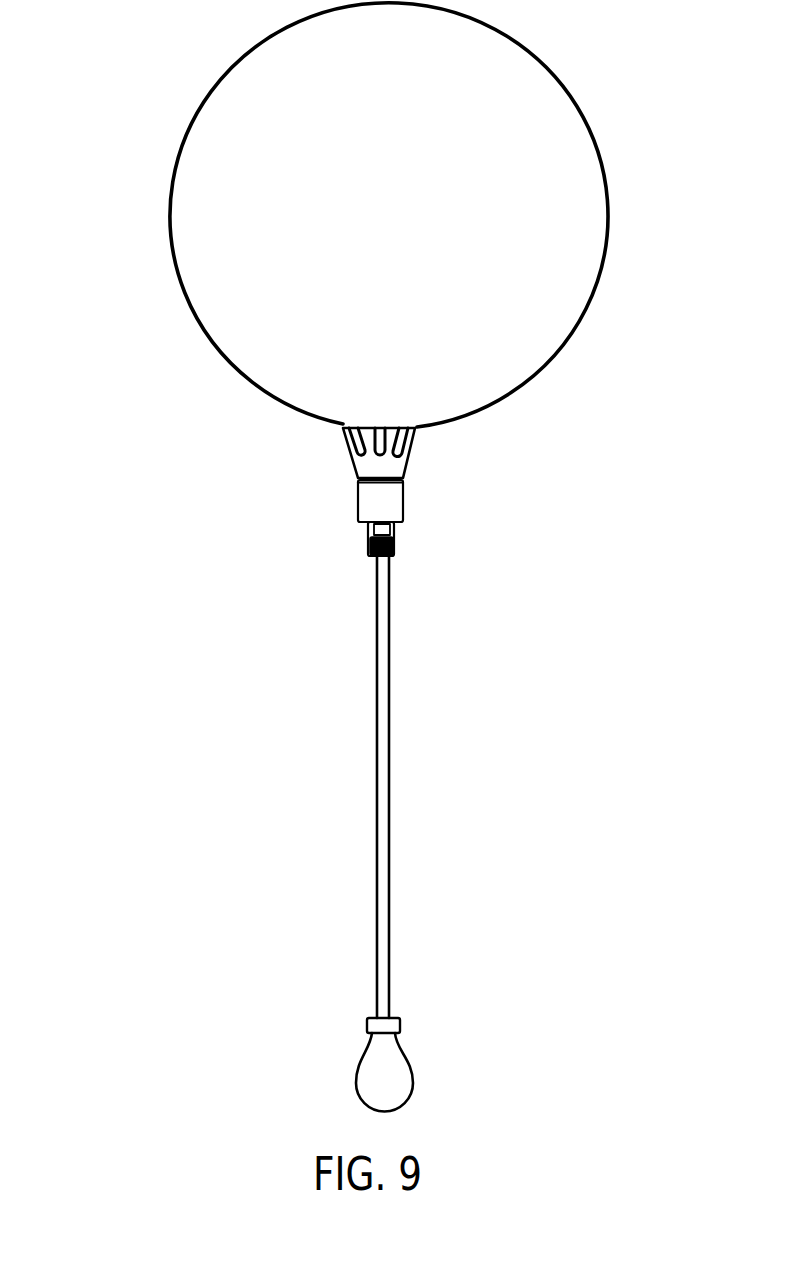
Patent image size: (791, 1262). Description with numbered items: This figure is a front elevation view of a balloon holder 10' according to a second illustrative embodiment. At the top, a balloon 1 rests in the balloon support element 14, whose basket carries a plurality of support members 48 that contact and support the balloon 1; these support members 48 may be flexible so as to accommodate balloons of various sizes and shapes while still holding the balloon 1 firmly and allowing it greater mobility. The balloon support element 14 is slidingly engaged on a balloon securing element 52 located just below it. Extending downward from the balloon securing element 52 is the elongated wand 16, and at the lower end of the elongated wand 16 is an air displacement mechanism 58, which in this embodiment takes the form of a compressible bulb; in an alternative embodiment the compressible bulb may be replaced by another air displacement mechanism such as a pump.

The balloon 1 is at (575, 102).
The balloon holder 10' is at (109, 492).
The balloon support element 14 is at (412, 470).
The support members 48 is at (362, 446).
The balloon securing element 52 is at (405, 542).
The elongated wand 16 is at (383, 742).
The air displacement mechanism 58 is at (392, 1069).